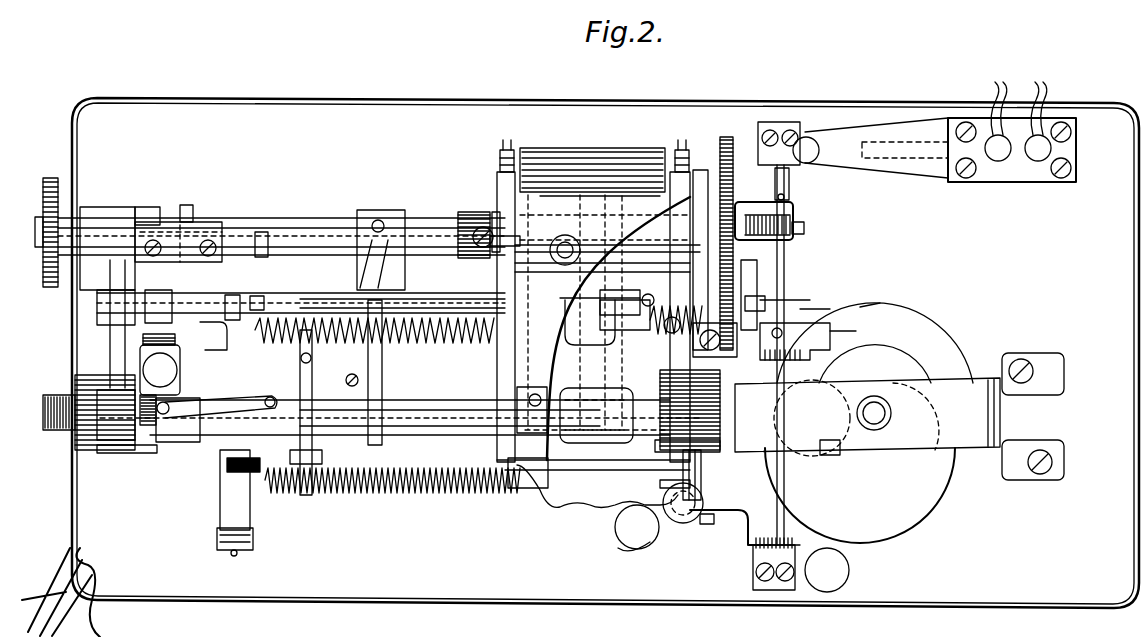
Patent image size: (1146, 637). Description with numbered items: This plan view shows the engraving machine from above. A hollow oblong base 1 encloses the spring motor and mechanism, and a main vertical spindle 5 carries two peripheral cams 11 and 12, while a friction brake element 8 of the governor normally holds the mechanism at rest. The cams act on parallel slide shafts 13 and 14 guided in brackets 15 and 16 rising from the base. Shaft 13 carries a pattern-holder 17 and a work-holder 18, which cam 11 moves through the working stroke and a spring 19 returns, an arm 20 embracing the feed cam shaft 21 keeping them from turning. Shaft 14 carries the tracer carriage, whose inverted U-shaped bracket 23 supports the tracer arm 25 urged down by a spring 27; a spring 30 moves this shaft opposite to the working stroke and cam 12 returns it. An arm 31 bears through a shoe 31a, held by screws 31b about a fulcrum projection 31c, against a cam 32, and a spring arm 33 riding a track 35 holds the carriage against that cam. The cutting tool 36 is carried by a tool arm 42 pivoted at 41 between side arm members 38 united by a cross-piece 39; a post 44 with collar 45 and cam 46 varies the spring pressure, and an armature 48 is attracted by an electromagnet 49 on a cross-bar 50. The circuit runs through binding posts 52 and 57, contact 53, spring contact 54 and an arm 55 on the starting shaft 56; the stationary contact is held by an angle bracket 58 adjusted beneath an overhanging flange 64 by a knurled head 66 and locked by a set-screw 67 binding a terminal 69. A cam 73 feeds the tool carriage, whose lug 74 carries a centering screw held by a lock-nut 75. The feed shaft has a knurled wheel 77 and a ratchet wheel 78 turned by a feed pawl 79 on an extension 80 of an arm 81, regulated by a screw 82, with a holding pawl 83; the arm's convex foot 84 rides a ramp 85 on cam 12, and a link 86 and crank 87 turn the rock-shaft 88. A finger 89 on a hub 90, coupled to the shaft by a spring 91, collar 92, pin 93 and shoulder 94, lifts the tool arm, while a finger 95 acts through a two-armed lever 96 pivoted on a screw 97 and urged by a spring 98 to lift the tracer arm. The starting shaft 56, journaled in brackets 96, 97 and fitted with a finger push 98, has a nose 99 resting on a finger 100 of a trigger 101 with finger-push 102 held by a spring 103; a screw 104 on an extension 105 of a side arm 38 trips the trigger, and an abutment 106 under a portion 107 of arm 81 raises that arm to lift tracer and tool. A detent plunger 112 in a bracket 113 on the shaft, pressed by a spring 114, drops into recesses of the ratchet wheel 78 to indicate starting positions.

The hollow oblong base 1 is at (580, 367).
The main vertical spindle 5 is at (892, 412).
The friction brake element 8 is at (268, 475).
The peripheral cam 11 is at (938, 495).
The peripheral cam 12 is at (945, 336).
The slide shaft 13 is at (440, 432).
The slide shaft 14 is at (48, 430).
The bracket 15 is at (118, 450).
The bracket 16 is at (690, 410).
The pattern-holder 17 is at (175, 445).
The work-holder 18 is at (550, 511).
The spring 19 is at (390, 496).
The arm 20 is at (382, 350).
The feed cam shaft 21 is at (333, 230).
The inverted U-shaped bracket 23 is at (305, 497).
The tracer arm 25 is at (150, 447).
The spring 27 is at (210, 414).
The spring 30 is at (445, 340).
The arm 31 is at (233, 296).
The shoe 31a is at (152, 222).
The screws 31b is at (226, 250).
The fulcrum projection 31c is at (210, 240).
The cam 32 is at (188, 205).
The spring arm 33 is at (222, 505).
The track 35 is at (222, 552).
The engraving or cutting tool 36 is at (530, 404).
The side arm members 38 is at (660, 190).
The cross-piece 39 is at (622, 192).
The tool arm pivot 41 is at (675, 170).
The tool arm 42 is at (512, 496).
The post 44 is at (562, 238).
The collar 45 is at (572, 244).
The cam 46 is at (560, 266).
The armature 48 is at (590, 140).
The electromagnet 49 is at (570, 176).
The cross-bar 50 is at (672, 290).
The binding post 52 is at (1000, 183).
The contact 53 is at (925, 160).
The spring contact 54 is at (880, 130).
The arm 55 is at (800, 128).
The starting shaft 56 is at (790, 184).
The binding post 57 is at (1045, 183).
The angle bracket 58 is at (140, 455).
The overhanging flange 64 is at (78, 380).
The knurled head 66 is at (150, 368).
The set-screw 67 is at (145, 325).
The terminal 69 is at (143, 340).
The cam 73 is at (497, 212).
The lug 74 is at (472, 256).
The lock-nut 75 is at (470, 232).
The knurled wheel 77 is at (50, 178).
The ratchet wheel 78 is at (730, 135).
The feed pawl 79 is at (795, 366).
The upward extension 80 is at (760, 275).
The arm 81 is at (768, 306).
The screw 82 is at (715, 357).
The holding pawl 83 is at (800, 300).
The convex foot 84 is at (800, 462).
The ramp 85 is at (840, 470).
The link 86 is at (835, 352).
The crank 87 is at (822, 310).
The longitudinal rock-shaft 88 is at (320, 295).
The finger 89 is at (596, 386).
The hub 90 is at (603, 342).
The spring 91 is at (650, 290).
The collar 92 is at (704, 200).
The pin 93 is at (585, 300).
The shoulder 94 is at (638, 275).
The finger 95 is at (278, 292).
The two-armed lever 96 is at (753, 556).
The screw 97 is at (776, 184).
The spring 98 is at (850, 572).
The nose 99 is at (735, 520).
The finger 100 is at (690, 526).
The trigger 101 is at (675, 522).
The finger-push 102 is at (620, 540).
The spring 103 is at (705, 520).
The screw 104 is at (628, 548).
The forward lower extension 105 is at (700, 463).
The abutment 106 is at (878, 304).
The portion 107 is at (856, 331).
The detent plunger 112 is at (800, 229).
The bracket 113 is at (800, 210).
The spring 114 is at (795, 218).